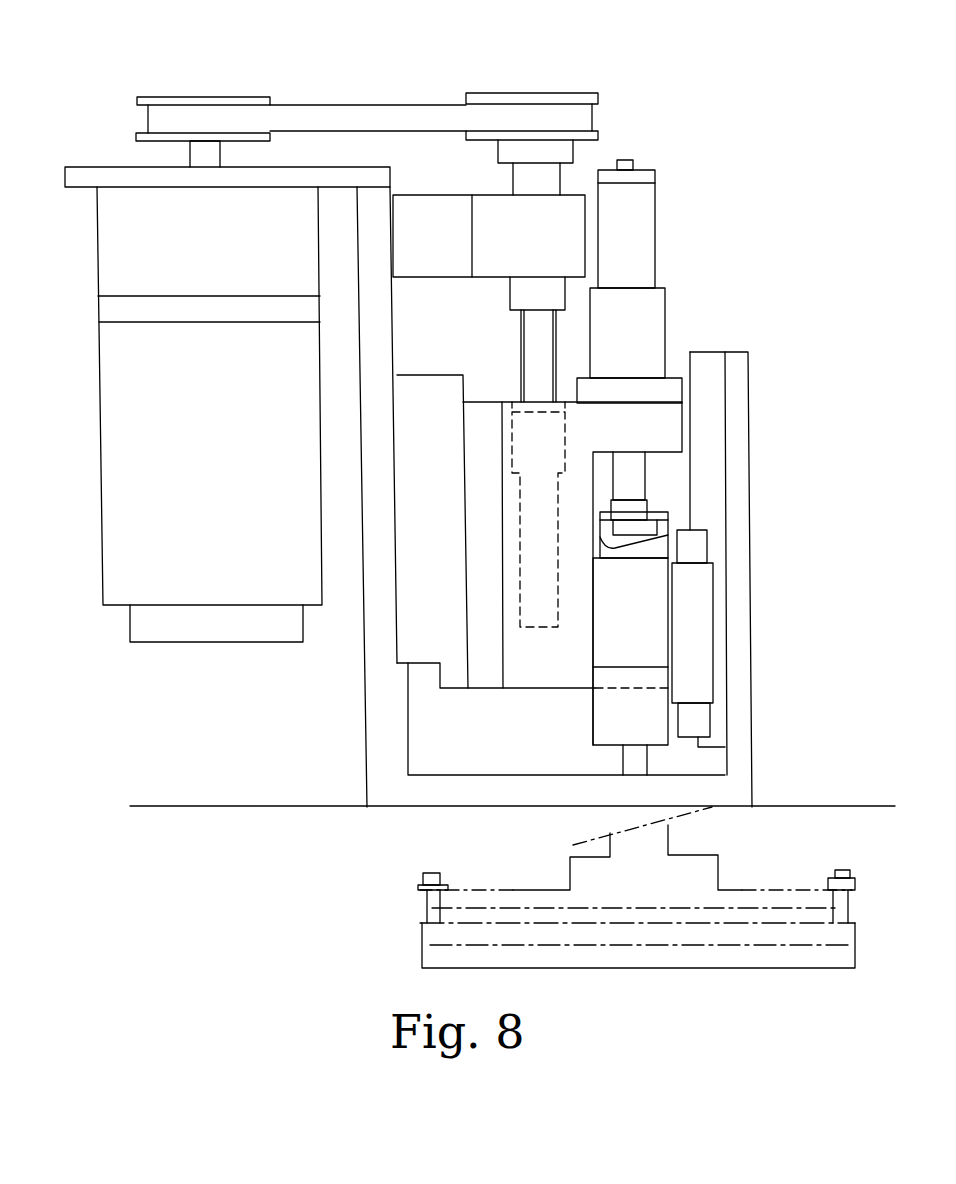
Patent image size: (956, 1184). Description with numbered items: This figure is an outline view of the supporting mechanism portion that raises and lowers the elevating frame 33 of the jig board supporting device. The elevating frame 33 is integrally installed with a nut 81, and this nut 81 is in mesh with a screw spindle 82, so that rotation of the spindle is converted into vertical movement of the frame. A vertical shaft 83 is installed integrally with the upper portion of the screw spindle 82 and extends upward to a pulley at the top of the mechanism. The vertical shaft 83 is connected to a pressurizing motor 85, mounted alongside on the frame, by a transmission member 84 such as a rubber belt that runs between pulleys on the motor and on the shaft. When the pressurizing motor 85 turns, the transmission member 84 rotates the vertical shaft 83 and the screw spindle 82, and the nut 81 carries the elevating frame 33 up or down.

The elevating frame 33 is at (665, 422).
The nut 81 is at (565, 462).
The screw spindle 82 is at (542, 338).
The vertical shaft 83 is at (553, 178).
The transmission member 84 is at (390, 115).
The pressurizing motor 85 is at (128, 574).